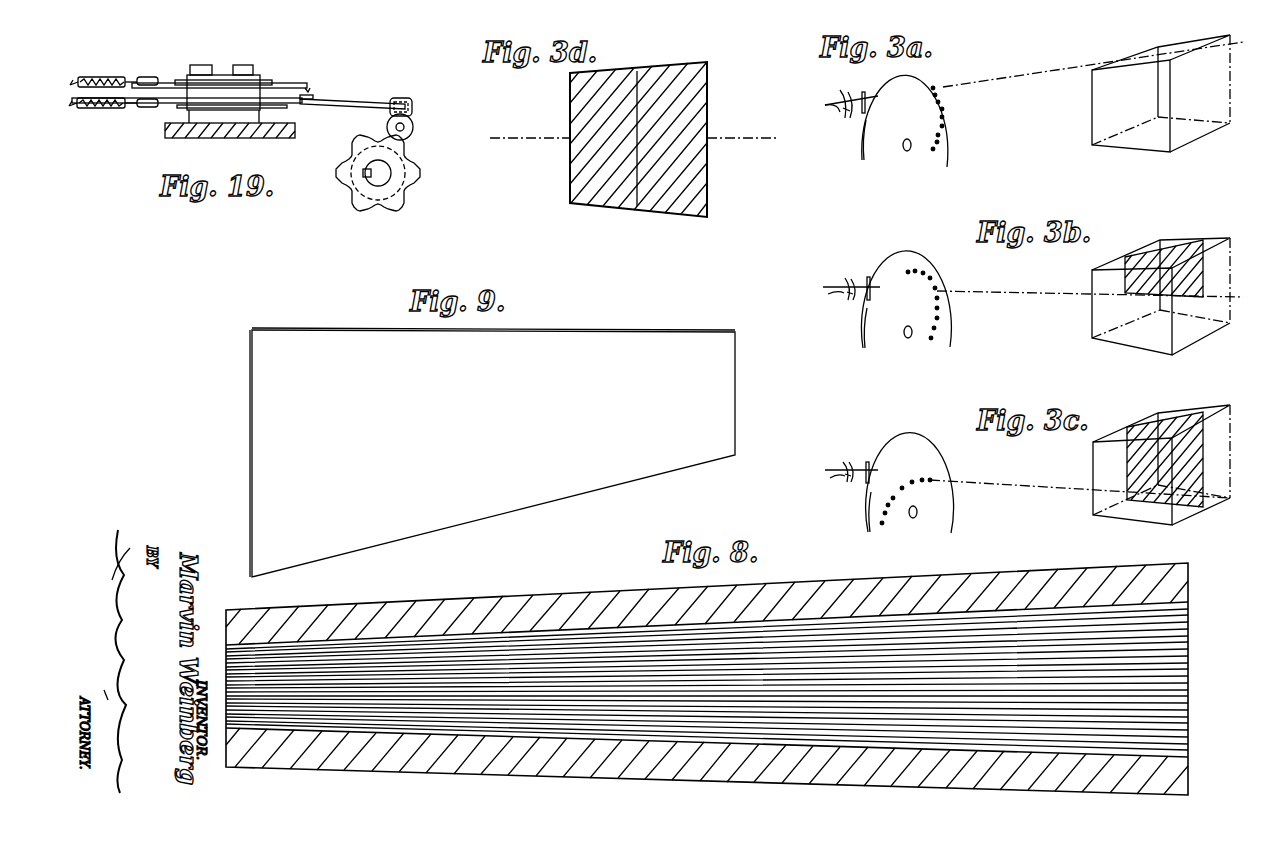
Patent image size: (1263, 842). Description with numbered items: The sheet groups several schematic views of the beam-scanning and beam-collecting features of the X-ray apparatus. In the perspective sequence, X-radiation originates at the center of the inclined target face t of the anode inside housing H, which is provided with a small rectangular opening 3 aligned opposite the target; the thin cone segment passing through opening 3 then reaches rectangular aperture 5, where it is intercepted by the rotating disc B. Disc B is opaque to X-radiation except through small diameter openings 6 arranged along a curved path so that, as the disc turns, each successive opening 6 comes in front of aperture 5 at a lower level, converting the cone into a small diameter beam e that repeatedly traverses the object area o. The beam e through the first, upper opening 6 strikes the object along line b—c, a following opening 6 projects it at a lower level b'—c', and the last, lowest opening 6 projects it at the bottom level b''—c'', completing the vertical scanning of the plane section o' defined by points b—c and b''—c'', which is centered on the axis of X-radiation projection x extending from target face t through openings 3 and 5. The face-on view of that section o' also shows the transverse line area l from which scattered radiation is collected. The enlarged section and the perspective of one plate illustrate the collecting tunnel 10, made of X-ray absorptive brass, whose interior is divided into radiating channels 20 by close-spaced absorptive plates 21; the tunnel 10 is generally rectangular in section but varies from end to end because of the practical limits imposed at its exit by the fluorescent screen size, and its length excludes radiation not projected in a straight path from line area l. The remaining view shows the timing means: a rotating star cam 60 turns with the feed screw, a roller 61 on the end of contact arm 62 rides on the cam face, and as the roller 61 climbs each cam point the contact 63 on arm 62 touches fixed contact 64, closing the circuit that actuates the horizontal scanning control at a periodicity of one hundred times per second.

In FIG. 19, the star cam 60 is at (346, 200).
In FIG. 19, the roller 61 is at (415, 126).
In FIG. 19, the contact arm 62 is at (360, 102).
In FIG. 19, the contact 63 is at (313, 98).
In FIG. 19, the fixed contact 64 is at (305, 87).
In FIG. 8, the tunnel 10 is at (358, 610).
In FIG. 8, the radiating channels 20 is at (1183, 603).
In FIG. 9, the close-spaced plates 21 is at (328, 348).
In FIG. 8, the close-spaced plates 21 is at (980, 623).
In FIG. 3A, the rotating disc B is at (950, 151).
In FIG. 3B, the rotating disc B is at (925, 258).
In FIG. 3C, the rotating disc B is at (910, 470).
In FIG. 3A, the small diameter openings 6 is at (944, 110).
In FIG. 3B, the small diameter openings 6 is at (937, 322).
In FIG. 3C, the small diameter openings 6 is at (882, 526).
In FIG. 3A, the rectangular aperture 5 is at (866, 92).
In FIG. 3B, the rectangular aperture 5 is at (870, 278).
In FIG. 3C, the rectangular aperture 5 is at (870, 462).
In FIG. 3A, the rectangular opening 3 is at (852, 116).
In FIG. 3B, the rectangular opening 3 is at (856, 278).
In FIG. 3C, the rectangular opening 3 is at (855, 462).
In FIG. 3A, the housing H is at (842, 112).
In FIG. 3B, the housing H is at (846, 295).
In FIG. 3C, the housing H is at (846, 478).
In FIG. 3A, the target face t is at (825, 105).
In FIG. 3B, the target face t is at (826, 287).
In FIG. 3C, the target face t is at (826, 470).
In FIG. 3A, the small diameter beam of radiation e is at (1022, 66).
In FIG. 3B, the small diameter beam of radiation e is at (1033, 292).
In FIG. 3C, the small diameter beam of radiation e is at (1023, 492).
In FIG. 3D, the point b is at (556, 104).
In FIG. 3A, the point b is at (1120, 44).
In FIG. 3B, the point b is at (1132, 240).
In FIG. 3C, the point b is at (1133, 409).
In FIG. 3D, the point c is at (721, 93).
In FIG. 3A, the point c is at (1211, 32).
In FIG. 3B, the point c is at (1212, 226).
In FIG. 3C, the point c is at (1214, 396).
In FIG. 3A, the object area o is at (1230, 98).
In FIG. 3B, the object area o is at (1229, 301).
In FIG. 3C, the object area o is at (1230, 465).
In FIG. 3D, the irradiated plane section o' is at (730, 139).
In FIG. 3B, the irradiated plane section o' is at (1238, 216).
In FIG. 3C, the irradiated plane section o' is at (1217, 436).
In FIG. 3B, the point b' is at (1114, 311).
In FIG. 3B, the point c' is at (1218, 284).
In FIG. 3D, the point b'' is at (558, 185).
In FIG. 3C, the point b'' is at (1125, 524).
In FIG. 3D, the point c'' is at (728, 182).
In FIG. 3C, the point c'' is at (1215, 524).
In FIG. 3D, the transverse line area l is at (638, 196).
In FIG. 3D, the axis of X-radiation projection x is at (515, 136).